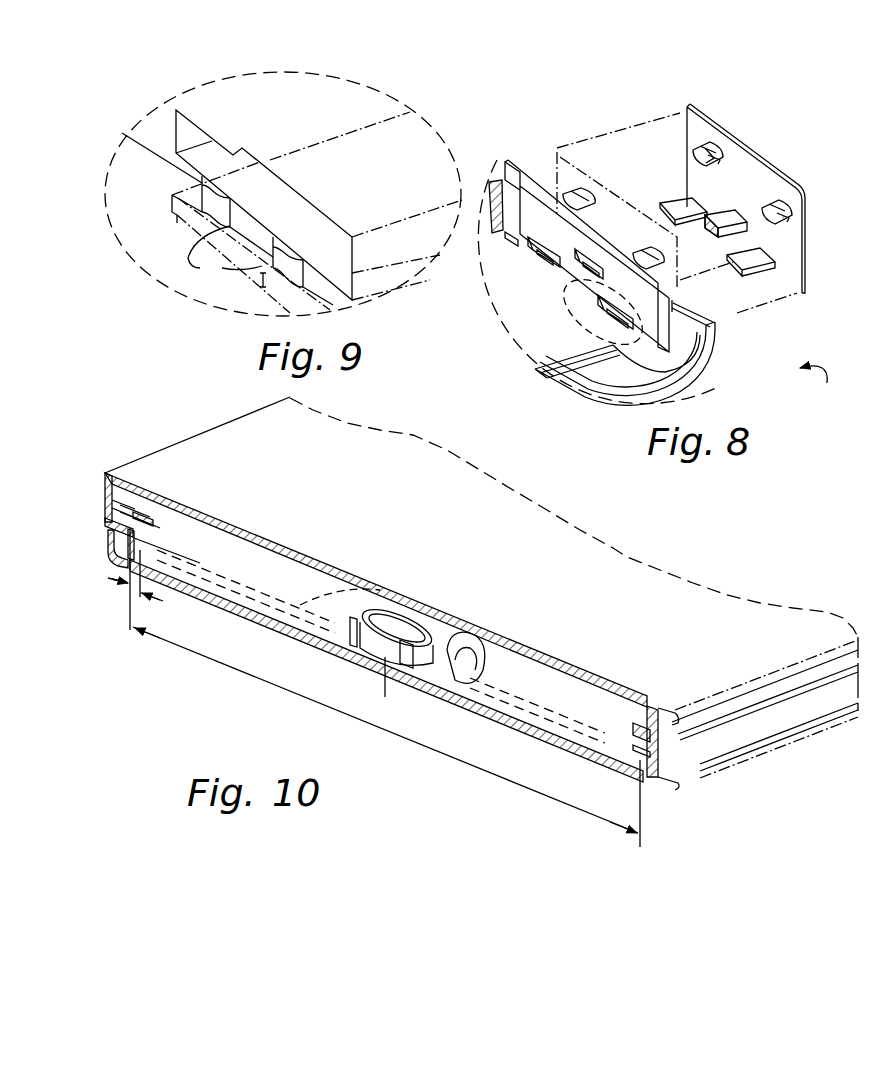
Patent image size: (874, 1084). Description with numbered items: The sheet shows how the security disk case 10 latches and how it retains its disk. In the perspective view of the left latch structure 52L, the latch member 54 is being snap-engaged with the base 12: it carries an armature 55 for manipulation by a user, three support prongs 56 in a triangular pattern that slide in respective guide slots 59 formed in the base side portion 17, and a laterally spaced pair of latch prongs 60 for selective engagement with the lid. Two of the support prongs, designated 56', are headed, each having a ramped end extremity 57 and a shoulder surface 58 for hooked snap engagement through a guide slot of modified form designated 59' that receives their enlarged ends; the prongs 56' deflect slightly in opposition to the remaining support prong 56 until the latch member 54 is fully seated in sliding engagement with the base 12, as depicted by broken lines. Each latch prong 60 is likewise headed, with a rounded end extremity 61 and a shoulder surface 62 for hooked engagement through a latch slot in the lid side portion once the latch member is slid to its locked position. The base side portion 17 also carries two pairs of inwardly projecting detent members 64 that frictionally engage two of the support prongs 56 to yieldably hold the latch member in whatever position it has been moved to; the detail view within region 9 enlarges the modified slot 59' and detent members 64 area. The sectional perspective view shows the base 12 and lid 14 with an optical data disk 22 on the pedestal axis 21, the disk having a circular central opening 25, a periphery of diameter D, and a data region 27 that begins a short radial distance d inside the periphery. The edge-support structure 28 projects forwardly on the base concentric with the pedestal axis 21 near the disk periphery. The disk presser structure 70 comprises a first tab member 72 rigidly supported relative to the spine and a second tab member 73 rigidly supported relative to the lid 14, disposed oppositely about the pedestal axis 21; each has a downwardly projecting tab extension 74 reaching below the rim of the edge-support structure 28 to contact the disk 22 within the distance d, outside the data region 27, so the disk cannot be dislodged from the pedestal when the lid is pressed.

In FIG. 8, the region 9 is at (563, 328).
In FIG. 10, the security disk case 10 is at (365, 770).
In FIG. 8, the base 12 is at (713, 380).
In FIG. 10, the base 12 is at (787, 748).
In FIG. 10, the lid 14 is at (241, 418).
In FIG. 9, the base side portion 17 is at (300, 123).
In FIG. 8, the base side portion 17 is at (545, 168).
In FIG. 10, the pedestal axis 21 is at (383, 687).
In FIG. 10, the optical data disk 22 is at (513, 720).
In FIG. 10, the circular central opening 25 is at (413, 668).
In FIG. 10, the data region 27 is at (203, 562).
In FIG. 10, the edge-support structure 28 is at (662, 751).
In FIG. 8, the left latch structure 52L is at (807, 391).
In FIG. 8, the latch member 54 is at (687, 203).
In FIG. 8, the armature 55 is at (768, 170).
In FIG. 8, the support prongs 56 is at (726, 205).
In FIG. 9, the headed support prongs 56' is at (226, 223).
In FIG. 8, the headed support prongs 56' is at (763, 214).
In FIG. 8, the ramped end extremity 57 is at (737, 278).
In FIG. 8, the shoulder surface 58 is at (770, 277).
In FIG. 8, the guide slots 59 is at (578, 264).
In FIG. 9, the modified guide slot 59' is at (261, 204).
In FIG. 8, the modified guide slot 59' is at (540, 271).
In FIG. 8, the latch prong 60 is at (703, 150).
In FIG. 8, the rounded end extremity 61 is at (697, 145).
In FIG. 8, the shoulder surface 62 is at (722, 151).
In FIG. 9, the detent members 64 is at (227, 256).
In FIG. 8, the detent members 64 is at (537, 260).
In FIG. 10, the disk presser structure 70 is at (277, 509).
In FIG. 10, the first tab member 72 is at (133, 508).
In FIG. 10, the second tab member 73 is at (648, 703).
In FIG. 10, the tab extension 74 is at (157, 510).
In FIG. 10, the diameter of the periphery D is at (385, 687).
In FIG. 10, the radial distance d is at (143, 581).